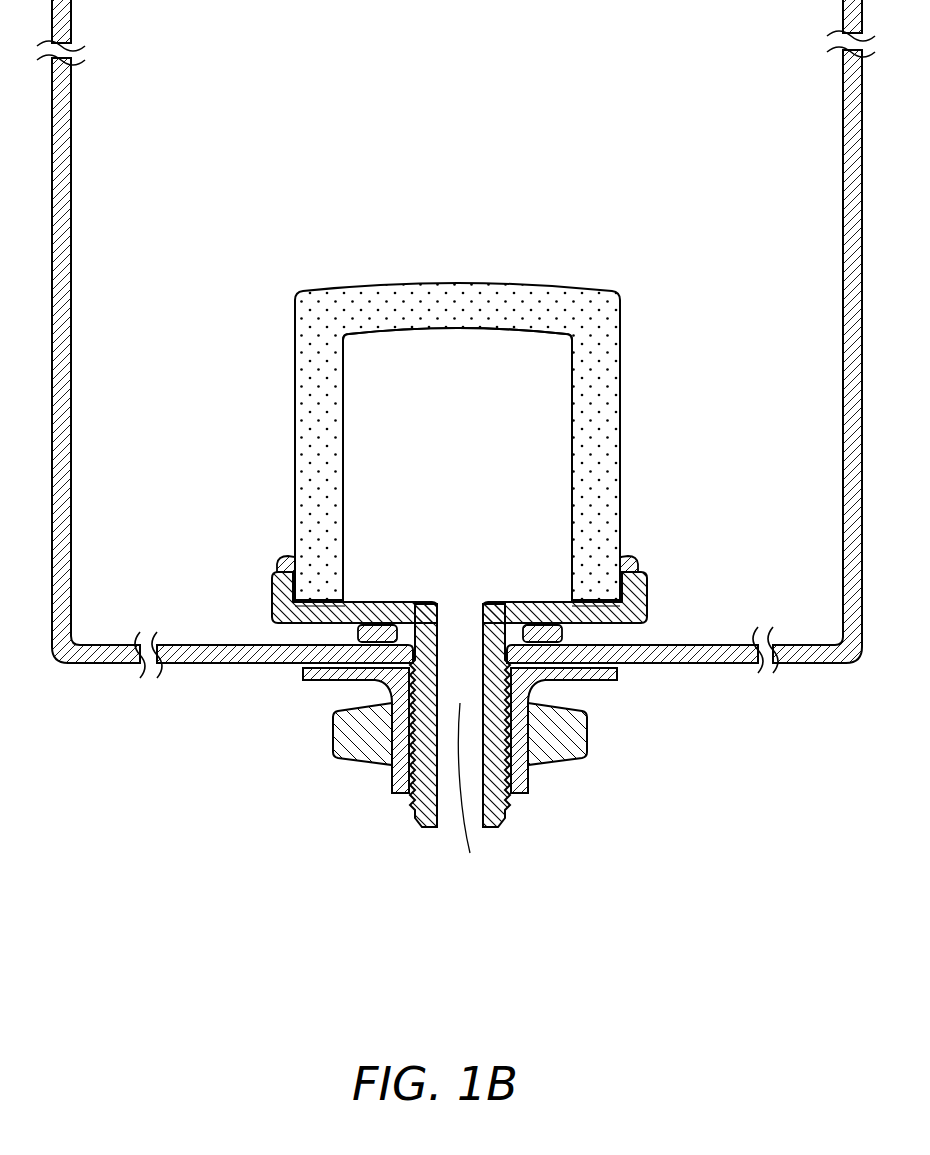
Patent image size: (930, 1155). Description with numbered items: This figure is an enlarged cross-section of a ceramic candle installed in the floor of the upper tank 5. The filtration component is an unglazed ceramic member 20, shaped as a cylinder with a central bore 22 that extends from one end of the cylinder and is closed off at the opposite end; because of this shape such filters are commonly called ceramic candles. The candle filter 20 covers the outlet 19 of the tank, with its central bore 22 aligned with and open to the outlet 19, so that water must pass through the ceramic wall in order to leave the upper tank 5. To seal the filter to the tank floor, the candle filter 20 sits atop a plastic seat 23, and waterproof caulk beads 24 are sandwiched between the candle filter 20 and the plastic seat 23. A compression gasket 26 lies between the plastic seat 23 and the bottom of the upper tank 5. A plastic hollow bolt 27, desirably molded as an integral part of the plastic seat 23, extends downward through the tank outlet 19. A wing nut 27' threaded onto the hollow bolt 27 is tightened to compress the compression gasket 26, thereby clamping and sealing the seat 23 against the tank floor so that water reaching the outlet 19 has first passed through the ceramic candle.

The upper tank 5 is at (100, 638).
The outlet 19 is at (470, 853).
The unglazed ceramic member 20 is at (598, 385).
The central bore 22 is at (480, 518).
The plastic seat 23 is at (270, 596).
The waterproof caulk beads 24 is at (281, 558).
The compression gasket 26 is at (345, 636).
The plastic hollow bolt 27 is at (404, 732).
The wing nut 27' is at (405, 730).